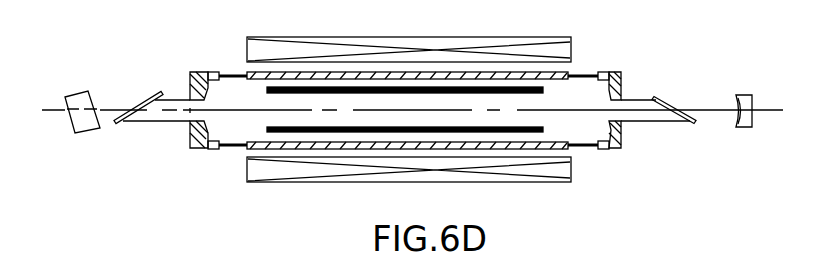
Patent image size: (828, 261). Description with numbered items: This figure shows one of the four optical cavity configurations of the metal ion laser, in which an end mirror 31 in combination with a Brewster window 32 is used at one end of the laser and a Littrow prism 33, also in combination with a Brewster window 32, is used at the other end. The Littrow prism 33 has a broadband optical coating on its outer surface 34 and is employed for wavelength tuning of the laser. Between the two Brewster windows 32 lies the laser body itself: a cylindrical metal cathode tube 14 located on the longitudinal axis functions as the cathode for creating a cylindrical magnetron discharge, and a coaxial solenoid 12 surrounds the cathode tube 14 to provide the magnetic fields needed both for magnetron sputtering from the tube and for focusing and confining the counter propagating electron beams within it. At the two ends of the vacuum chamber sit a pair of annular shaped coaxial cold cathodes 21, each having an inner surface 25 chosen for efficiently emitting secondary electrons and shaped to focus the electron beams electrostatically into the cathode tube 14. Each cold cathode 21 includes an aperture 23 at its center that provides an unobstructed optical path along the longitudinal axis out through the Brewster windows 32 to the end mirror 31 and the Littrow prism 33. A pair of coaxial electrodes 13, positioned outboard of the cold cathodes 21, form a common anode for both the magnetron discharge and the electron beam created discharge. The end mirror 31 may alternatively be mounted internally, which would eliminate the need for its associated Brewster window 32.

The coaxial solenoid 12 is at (267, 182).
The coaxial electrodes 13 is at (227, 149).
The cylindrical metal cathode tube 14 is at (462, 133).
The annular shaped coaxial cold cathodes 21 is at (213, 152).
The aperture 23 is at (196, 110).
The inner surface 25 is at (199, 72).
The end mirror 31 is at (747, 96).
The Brewster window 32 is at (118, 122).
The Littrow prism 33 is at (87, 123).
The outer surface 34 is at (67, 110).